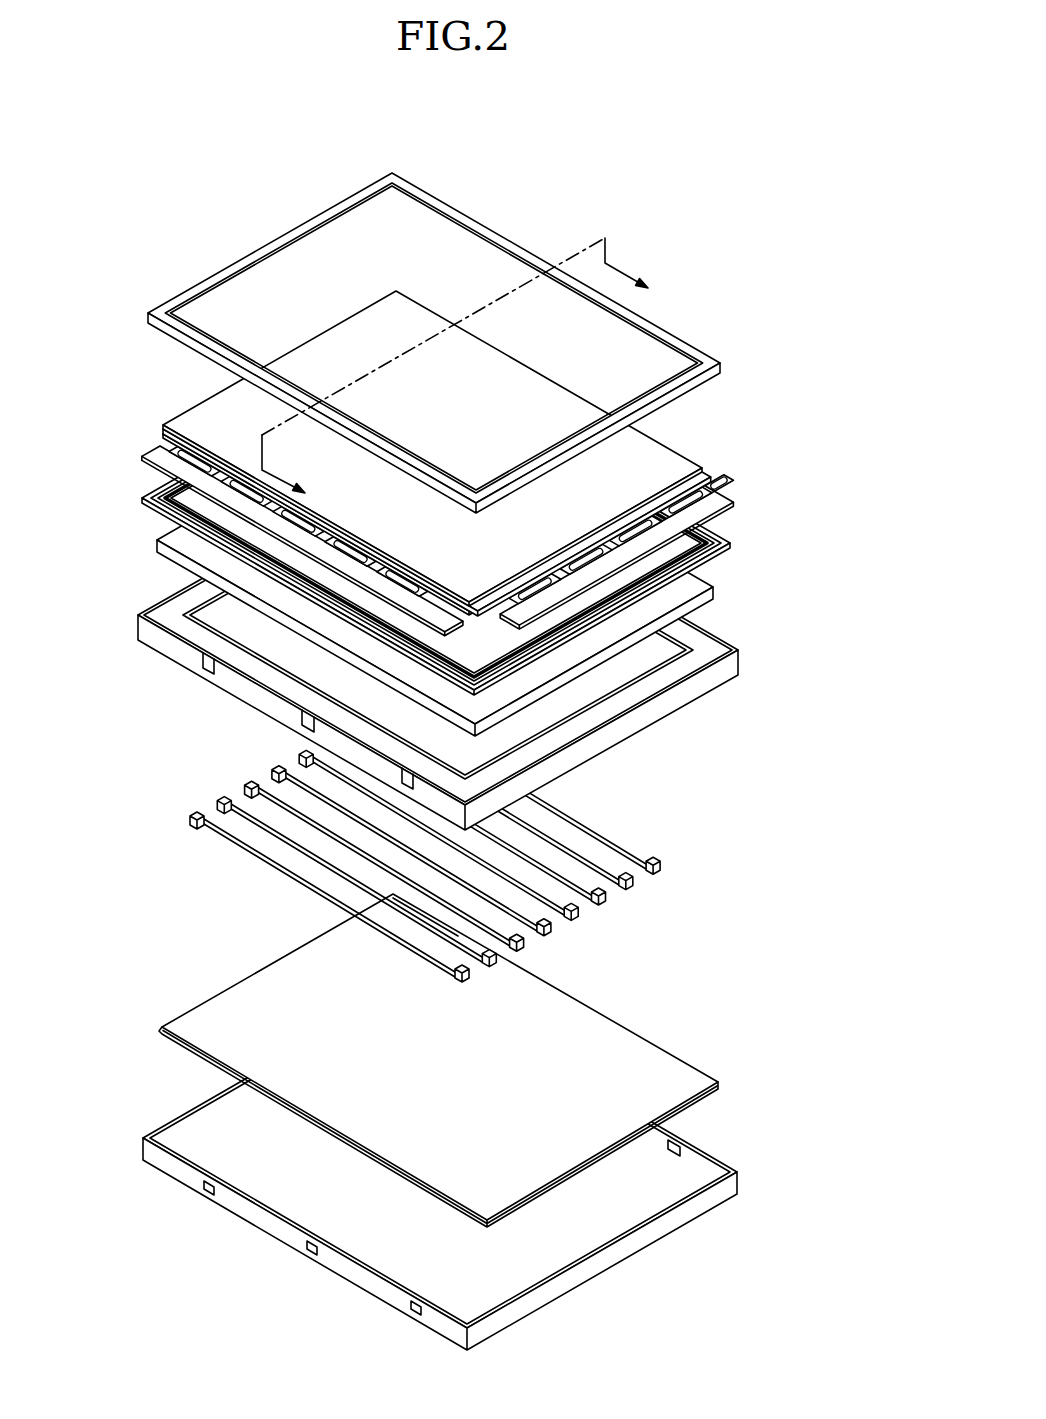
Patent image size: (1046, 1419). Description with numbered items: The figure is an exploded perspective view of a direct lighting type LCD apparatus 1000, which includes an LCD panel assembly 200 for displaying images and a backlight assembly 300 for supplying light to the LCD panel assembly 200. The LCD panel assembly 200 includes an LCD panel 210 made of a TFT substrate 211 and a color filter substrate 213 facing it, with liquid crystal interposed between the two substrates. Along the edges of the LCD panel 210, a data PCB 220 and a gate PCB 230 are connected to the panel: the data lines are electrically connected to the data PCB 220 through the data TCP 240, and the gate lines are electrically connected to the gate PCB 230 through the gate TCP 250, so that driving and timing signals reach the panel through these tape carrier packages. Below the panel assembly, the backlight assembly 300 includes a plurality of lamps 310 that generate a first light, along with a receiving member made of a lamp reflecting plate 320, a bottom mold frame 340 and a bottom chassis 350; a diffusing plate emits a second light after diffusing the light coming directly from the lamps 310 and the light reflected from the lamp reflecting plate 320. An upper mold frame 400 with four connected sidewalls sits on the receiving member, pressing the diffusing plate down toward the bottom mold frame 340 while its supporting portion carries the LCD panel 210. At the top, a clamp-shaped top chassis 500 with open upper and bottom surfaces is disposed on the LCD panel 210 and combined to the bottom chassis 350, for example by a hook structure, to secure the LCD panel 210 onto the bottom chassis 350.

The direct lighting type LCD apparatus 1000 is at (448, 140).
The LCD panel assembly 200 is at (452, 463).
The LCD panel 210 is at (509, 453).
The TFT substrate 211 is at (712, 484).
The color filter substrate 213 is at (705, 470).
The data PCB 220 is at (140, 457).
The gate PCB 230 is at (692, 517).
The data TCP 240 is at (158, 438).
The gate TCP 250 is at (715, 492).
The backlight assembly 300 is at (136, 528).
The lamps 310 is at (600, 838).
The lamp reflecting plate 320 is at (715, 1086).
The bottom mold frame 340 is at (737, 676).
The bottom chassis 350 is at (740, 1181).
The upper mold frame 400 is at (733, 547).
The top chassis 500 is at (707, 352).